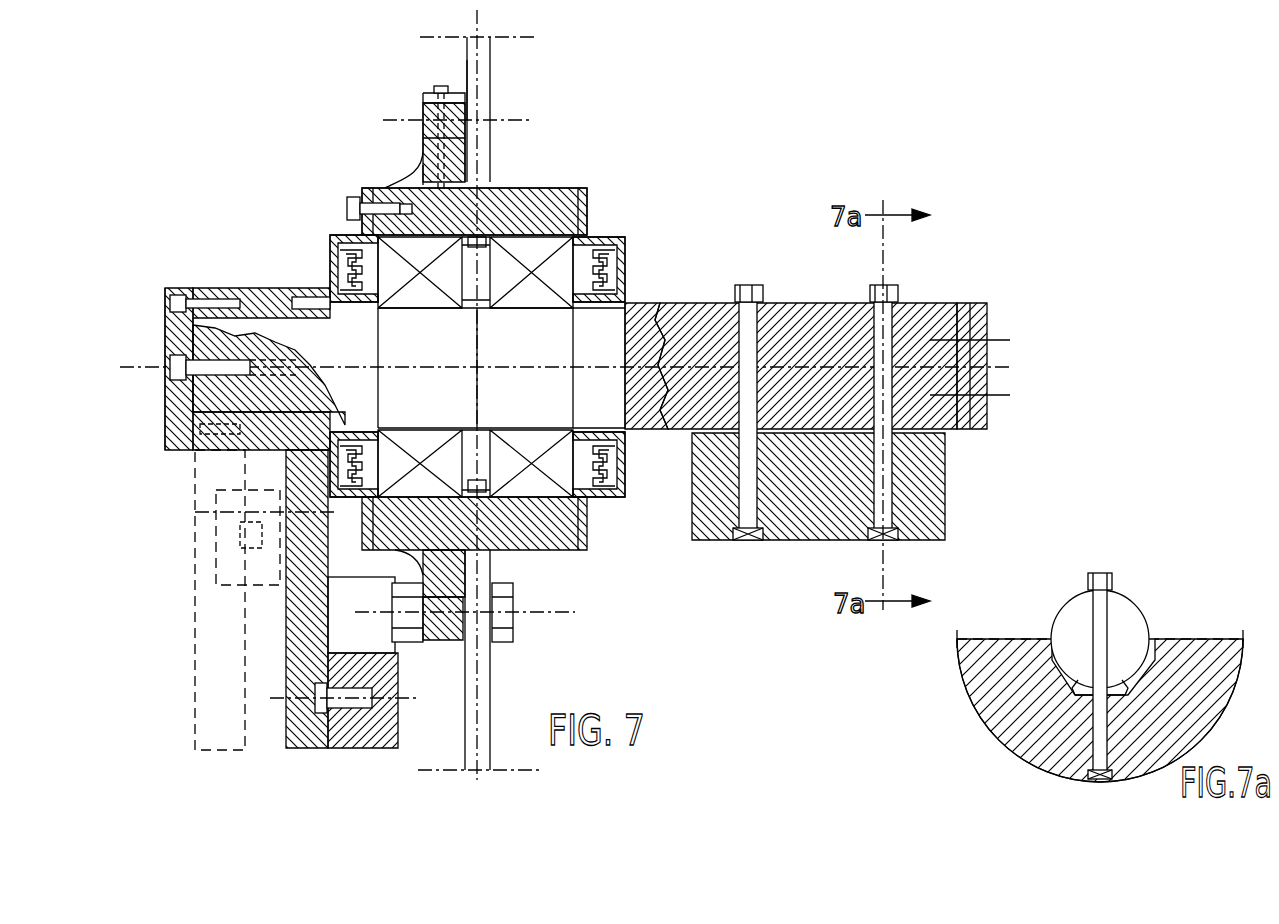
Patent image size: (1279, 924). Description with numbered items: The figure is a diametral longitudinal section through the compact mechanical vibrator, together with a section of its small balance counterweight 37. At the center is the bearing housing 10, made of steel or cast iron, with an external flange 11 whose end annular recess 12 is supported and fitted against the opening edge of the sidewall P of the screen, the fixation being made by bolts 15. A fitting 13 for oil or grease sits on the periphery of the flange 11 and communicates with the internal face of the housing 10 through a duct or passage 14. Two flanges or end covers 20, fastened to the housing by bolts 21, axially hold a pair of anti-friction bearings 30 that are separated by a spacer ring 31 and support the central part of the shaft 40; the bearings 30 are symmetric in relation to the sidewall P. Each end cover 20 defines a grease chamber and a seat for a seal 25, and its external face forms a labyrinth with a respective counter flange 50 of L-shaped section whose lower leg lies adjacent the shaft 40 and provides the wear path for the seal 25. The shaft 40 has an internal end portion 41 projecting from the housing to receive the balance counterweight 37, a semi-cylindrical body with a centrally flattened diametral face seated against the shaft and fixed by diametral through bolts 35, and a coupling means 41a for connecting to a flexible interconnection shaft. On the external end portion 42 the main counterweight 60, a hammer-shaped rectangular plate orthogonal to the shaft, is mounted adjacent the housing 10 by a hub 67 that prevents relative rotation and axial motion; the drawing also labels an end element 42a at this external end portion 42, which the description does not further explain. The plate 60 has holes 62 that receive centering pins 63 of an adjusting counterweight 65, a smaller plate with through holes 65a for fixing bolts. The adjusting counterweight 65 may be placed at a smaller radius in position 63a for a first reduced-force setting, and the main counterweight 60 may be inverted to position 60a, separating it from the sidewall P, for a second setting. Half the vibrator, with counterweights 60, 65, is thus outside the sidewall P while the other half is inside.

In FIG. 7, the bearing housing 10 is at (587, 168).
In FIG. 7, the external flange 11 is at (423, 155).
In FIG. 7, the end annular recess 12 is at (492, 182).
In FIG. 7, the fitting 13 is at (441, 88).
In FIG. 7, the duct or passage 14 is at (422, 170).
In FIG. 7, the bolts 15 is at (520, 625).
In FIG. 7, the end cover 20 is at (362, 192).
In FIG. 7, the bolts 21 is at (340, 202).
In FIG. 7, the seal 25 is at (336, 278).
In FIG. 7, the bearings 30 is at (390, 255).
In FIG. 7, the spacer ring 31 is at (493, 470).
In FIG. 7, the diametral through bolts 35 is at (878, 455).
In FIG. 7a, the diametral through bolts 35 is at (1100, 720).
In FIG. 7, the balance counterweight 37 is at (935, 508).
In FIG. 7a, the balance counterweight 37 is at (1030, 711).
In FIG. 7, the shaft 40 is at (633, 330).
In FIG. 7, the internal end portion 41 is at (801, 320).
In FIG. 7a, the internal end portion 41 is at (1126, 612).
In FIG. 7, the coupling means 41a is at (974, 322).
In FIG. 7, the external end portion 42 is at (224, 326).
In FIG. 7, the hub end plate 42a is at (166, 330).
In FIG. 7, the counter flange 50 is at (330, 258).
In FIG. 7, the main counterweight 60 is at (306, 752).
In FIG. 7, the inverted position 60a is at (215, 618).
In FIG. 7, the holes 62 is at (304, 702).
In FIG. 7, the centering pins 63 is at (346, 752).
In FIG. 7, the position 63a is at (260, 536).
In FIG. 7, the adjusting counterweight 65 is at (386, 750).
In FIG. 7, the through holes 65a is at (232, 519).
In FIG. 7, the hub 67 is at (240, 292).
In FIG. 7, the sidewall P is at (492, 77).